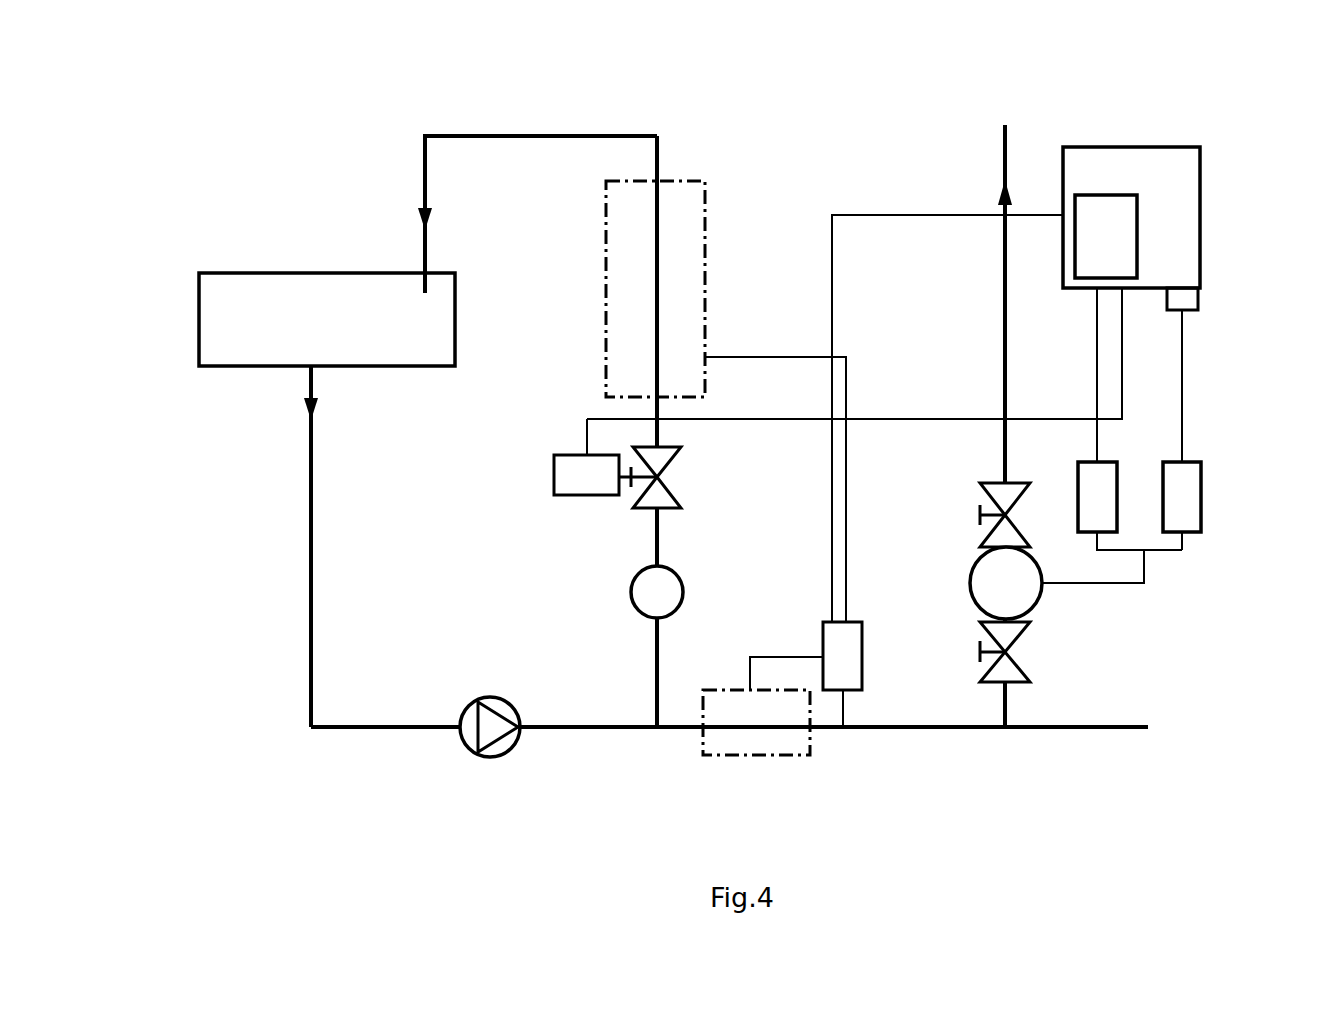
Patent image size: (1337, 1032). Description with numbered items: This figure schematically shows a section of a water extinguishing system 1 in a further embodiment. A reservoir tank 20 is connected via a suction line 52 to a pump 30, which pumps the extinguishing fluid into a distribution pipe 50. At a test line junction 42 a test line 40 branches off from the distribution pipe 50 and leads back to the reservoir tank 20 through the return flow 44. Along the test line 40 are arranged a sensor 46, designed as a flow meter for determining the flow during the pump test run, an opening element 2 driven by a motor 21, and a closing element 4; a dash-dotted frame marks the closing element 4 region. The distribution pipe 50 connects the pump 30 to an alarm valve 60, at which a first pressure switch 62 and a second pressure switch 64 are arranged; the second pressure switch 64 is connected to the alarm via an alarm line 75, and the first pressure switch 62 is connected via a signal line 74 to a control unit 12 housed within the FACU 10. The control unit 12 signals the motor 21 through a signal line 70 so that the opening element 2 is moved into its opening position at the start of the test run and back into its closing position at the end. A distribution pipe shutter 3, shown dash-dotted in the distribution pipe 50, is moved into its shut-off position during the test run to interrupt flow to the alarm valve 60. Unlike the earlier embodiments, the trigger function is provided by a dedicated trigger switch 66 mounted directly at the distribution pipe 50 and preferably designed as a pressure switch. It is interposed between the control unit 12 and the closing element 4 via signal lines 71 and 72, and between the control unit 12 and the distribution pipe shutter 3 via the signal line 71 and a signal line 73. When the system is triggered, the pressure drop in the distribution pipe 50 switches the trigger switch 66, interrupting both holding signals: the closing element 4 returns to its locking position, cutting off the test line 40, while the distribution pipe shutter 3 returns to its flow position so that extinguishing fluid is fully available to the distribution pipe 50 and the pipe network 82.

The water extinguishing system 1 is at (398, 94).
The opening element 2 is at (683, 481).
The distribution pipe shutter 3 is at (773, 758).
The closing element 4 is at (708, 208).
The FACU 10 is at (1168, 143).
The control unit 12 is at (1101, 192).
The reservoir tank 20 is at (283, 271).
The motor 21 is at (547, 477).
The pump 30 is at (528, 737).
The test line 40 is at (650, 538).
The test line junction 42 is at (653, 721).
The return flow 44 is at (434, 177).
The sensor 46 is at (683, 577).
The distribution pipe 50 is at (948, 736).
The suction line 52 is at (299, 492).
The alarm valve 60 is at (972, 558).
The first pressure switch 62 is at (1107, 461).
The second pressure switch 64 is at (1190, 459).
The trigger switch 66 is at (865, 632).
The signal line 70 is at (975, 415).
The signal line 71 is at (918, 212).
The signal line 72 is at (759, 353).
The signal line 73 is at (751, 653).
The signal line 74 is at (1096, 347).
The alarm line 75 is at (1186, 333).
The pipe network 82 is at (1008, 124).